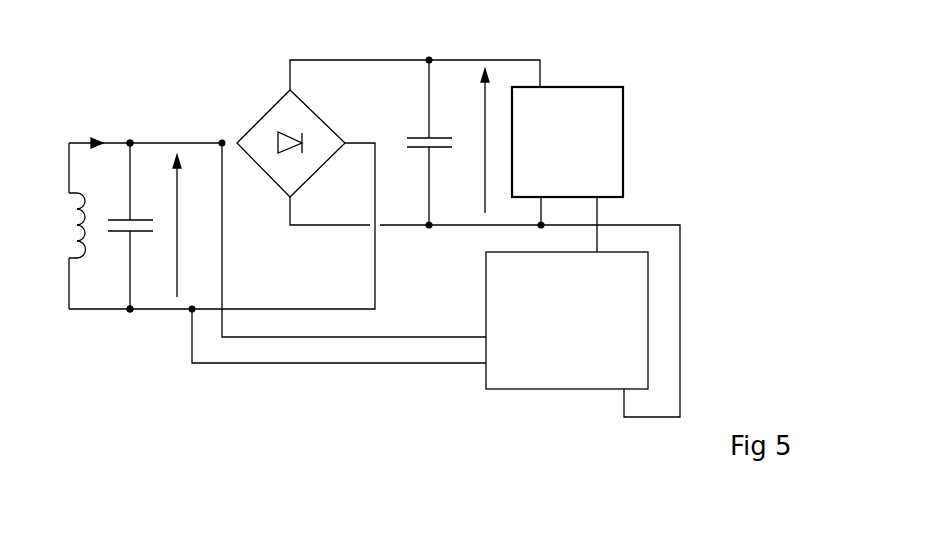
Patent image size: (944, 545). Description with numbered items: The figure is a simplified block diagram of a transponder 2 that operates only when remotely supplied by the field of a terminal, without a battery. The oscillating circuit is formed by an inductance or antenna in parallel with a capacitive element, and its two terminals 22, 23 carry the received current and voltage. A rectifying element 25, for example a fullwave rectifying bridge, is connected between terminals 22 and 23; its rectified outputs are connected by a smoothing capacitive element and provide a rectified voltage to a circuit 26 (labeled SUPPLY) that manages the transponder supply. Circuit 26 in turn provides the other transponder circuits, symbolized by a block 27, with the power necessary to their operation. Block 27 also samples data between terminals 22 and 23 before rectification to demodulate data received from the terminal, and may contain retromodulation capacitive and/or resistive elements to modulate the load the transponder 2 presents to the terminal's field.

The transponder 2 is at (358, 255).
The terminal of the oscillating circuit 22 is at (131, 141).
The terminal of the oscillating circuit 23 is at (132, 312).
The rectifying element 25 is at (267, 112).
The supply management circuit 26 is at (558, 87).
The block of other transponder circuits 27 is at (530, 390).